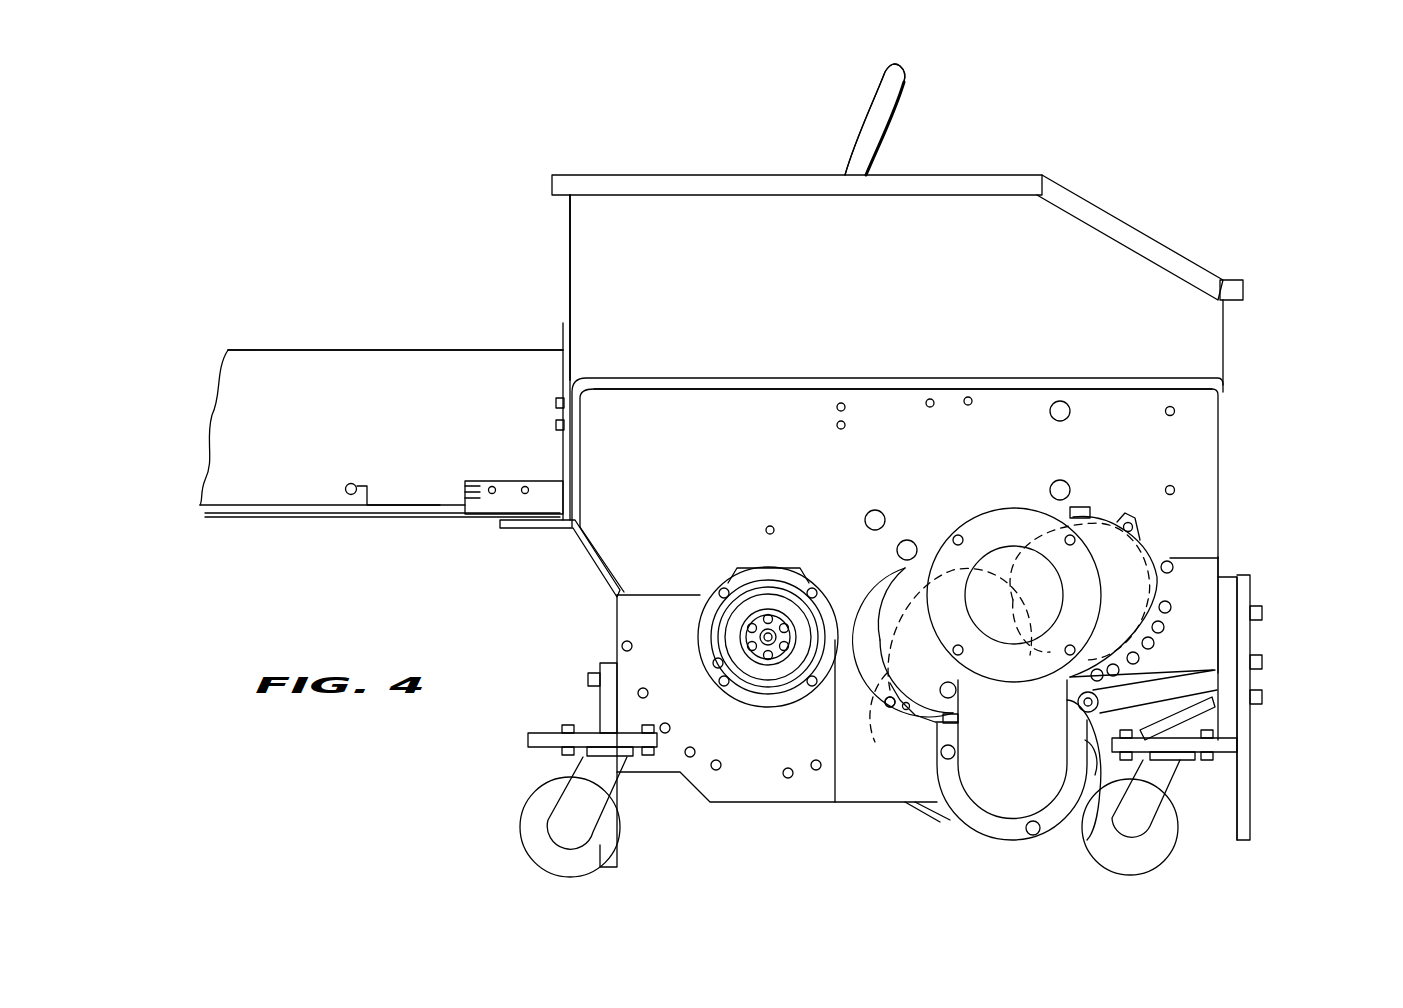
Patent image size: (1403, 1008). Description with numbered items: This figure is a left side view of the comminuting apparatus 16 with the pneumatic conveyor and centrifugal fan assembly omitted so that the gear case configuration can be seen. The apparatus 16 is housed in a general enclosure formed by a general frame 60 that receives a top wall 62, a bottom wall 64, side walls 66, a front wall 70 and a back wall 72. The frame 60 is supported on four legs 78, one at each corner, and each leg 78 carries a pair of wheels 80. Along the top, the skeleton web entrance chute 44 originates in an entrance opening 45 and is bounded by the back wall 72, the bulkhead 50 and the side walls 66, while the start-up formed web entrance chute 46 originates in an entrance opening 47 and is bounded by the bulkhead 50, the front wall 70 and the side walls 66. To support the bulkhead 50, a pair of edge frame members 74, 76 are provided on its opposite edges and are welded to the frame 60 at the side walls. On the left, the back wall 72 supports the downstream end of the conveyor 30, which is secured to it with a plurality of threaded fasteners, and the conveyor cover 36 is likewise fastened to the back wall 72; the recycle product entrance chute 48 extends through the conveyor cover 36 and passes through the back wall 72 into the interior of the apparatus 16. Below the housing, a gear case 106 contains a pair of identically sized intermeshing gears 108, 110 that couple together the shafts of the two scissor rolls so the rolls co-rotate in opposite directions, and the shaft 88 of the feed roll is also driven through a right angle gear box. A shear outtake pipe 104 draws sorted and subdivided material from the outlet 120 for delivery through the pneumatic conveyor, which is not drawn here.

The comminuting apparatus 16 is at (1255, 100).
The conveyor 30 is at (318, 335).
The conveyor cover 36 is at (405, 345).
The skeleton web entrance chute 44 is at (682, 120).
The entrance opening 45 is at (700, 174).
The start-up formed web entrance chute 46 is at (1105, 120).
The entrance opening 47 is at (975, 172).
The recycle product entrance chute 48 is at (195, 410).
The bulkhead 50 is at (898, 138).
The general frame 60 is at (582, 558).
The top wall 62 is at (800, 378).
The bottom wall 64 is at (760, 802).
The side wall 66 is at (669, 466).
The front wall 70 is at (1222, 512).
The back wall 72 is at (562, 265).
The edge frame member 74 is at (898, 62).
The edge frame member 76 is at (875, 119).
The leg 78 is at (530, 742).
The wheel 80 is at (522, 812).
The shaft 88 is at (785, 665).
The shear outtake pipe 104 is at (988, 792).
The gear case 106 is at (885, 598).
The gear 108 is at (894, 721).
The gear 110 is at (1100, 520).
The outlet 120 is at (1010, 845).